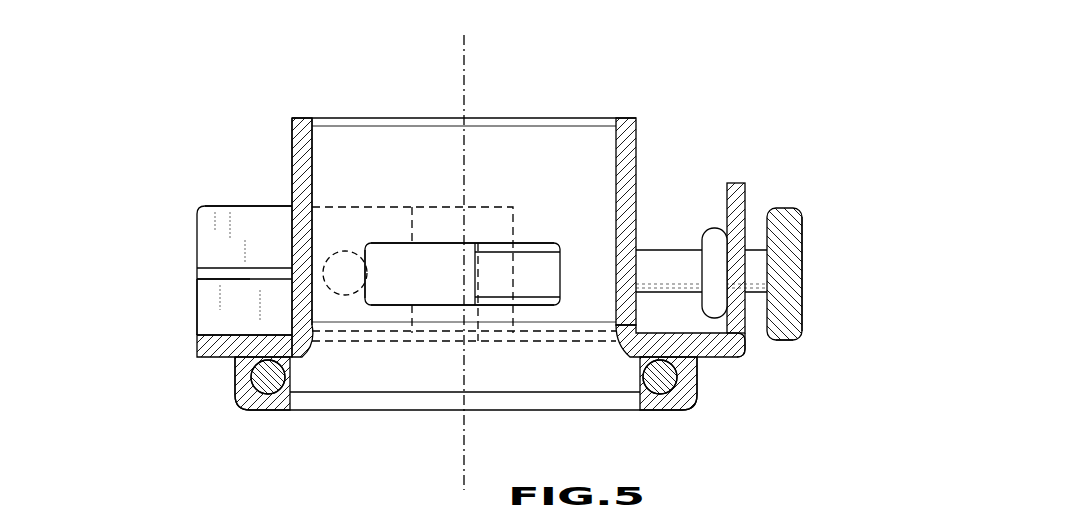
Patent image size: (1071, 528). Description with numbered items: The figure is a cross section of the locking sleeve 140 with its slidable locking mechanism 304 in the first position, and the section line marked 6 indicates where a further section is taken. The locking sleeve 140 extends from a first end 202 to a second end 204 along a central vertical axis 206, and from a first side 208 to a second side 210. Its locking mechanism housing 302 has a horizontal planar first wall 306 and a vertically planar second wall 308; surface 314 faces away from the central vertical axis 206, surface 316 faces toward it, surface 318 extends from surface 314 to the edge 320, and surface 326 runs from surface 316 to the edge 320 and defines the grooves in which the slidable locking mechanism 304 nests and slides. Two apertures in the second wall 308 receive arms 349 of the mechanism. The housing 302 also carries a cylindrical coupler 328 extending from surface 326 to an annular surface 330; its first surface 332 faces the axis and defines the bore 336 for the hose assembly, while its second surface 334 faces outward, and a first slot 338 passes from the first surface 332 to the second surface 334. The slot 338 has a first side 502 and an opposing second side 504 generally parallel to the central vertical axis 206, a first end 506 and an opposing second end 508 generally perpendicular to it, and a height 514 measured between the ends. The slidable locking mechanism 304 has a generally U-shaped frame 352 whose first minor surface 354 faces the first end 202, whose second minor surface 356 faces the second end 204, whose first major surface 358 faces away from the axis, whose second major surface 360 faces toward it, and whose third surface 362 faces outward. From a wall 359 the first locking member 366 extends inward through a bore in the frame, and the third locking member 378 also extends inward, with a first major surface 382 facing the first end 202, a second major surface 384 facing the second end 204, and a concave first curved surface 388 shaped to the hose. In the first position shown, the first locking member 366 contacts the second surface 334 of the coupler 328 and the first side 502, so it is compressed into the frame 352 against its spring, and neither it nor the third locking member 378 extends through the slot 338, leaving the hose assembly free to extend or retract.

The locking sleeve 140 is at (499, 259).
The first end 202 is at (446, 236).
The second end 204 is at (380, 435).
The central vertical axis 206 is at (481, 143).
The first side 208 is at (853, 283).
The second side 210 is at (176, 260).
The locking mechanism housing 302 is at (176, 391).
The horizontal planar first wall 306 is at (200, 372).
The slidable locking mechanism 304 is at (853, 283).
The U-shaped frame 352 is at (853, 283).
The vertically planar second wall 308 is at (729, 217).
The surface 314 is at (729, 217).
The surface 316 is at (696, 237).
The surface 318 is at (717, 365).
The edge 320 is at (215, 345).
The surface 326 is at (225, 335).
The cylindrical coupler 328 is at (282, 236).
The annular surface 330 is at (441, 107).
The first surface 332 is at (312, 152).
The second surface 334 is at (292, 152).
The bore 336 is at (408, 150).
The first slot 338 is at (410, 285).
The arms 349 is at (672, 266).
The first minor surface 354 is at (828, 283).
The second minor surface 356 is at (780, 342).
The first major surface 358 is at (803, 262).
The wall 359 is at (250, 200).
The second major surface 360 is at (760, 317).
The third surface 362 is at (225, 278).
The first locking member 366 is at (370, 247).
The third locking member 378 is at (176, 246).
The first major surface 382 is at (225, 255).
The second major surface 384 is at (228, 286).
The first curved surface 388 is at (222, 270).
The first side 502 is at (385, 243).
The second side 504 is at (547, 243).
The first end 506 is at (475, 323).
The second end 508 is at (463, 303).
The height 514 is at (538, 312).
The section line 6- 6 is at (428, 490).